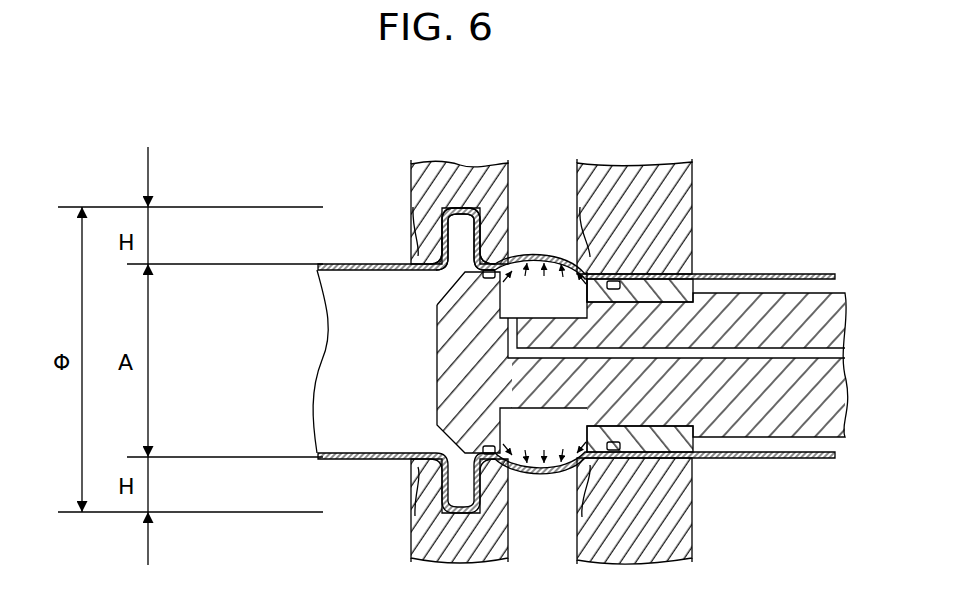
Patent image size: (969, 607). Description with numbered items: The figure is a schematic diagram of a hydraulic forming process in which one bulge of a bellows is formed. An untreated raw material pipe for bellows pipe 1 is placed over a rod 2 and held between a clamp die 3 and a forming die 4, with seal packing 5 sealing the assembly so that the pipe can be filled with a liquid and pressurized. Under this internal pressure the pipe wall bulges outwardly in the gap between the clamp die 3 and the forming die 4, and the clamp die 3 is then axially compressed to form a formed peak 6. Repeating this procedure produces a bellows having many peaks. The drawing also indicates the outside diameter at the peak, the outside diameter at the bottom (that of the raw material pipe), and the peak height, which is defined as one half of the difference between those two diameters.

The raw material pipe for bellows pipe 1 is at (378, 263).
The rod 2 is at (789, 439).
The clamp die 3 is at (428, 182).
The forming die 4 is at (697, 191).
The seal packing 5 is at (617, 271).
The formed peak 6 is at (462, 204).